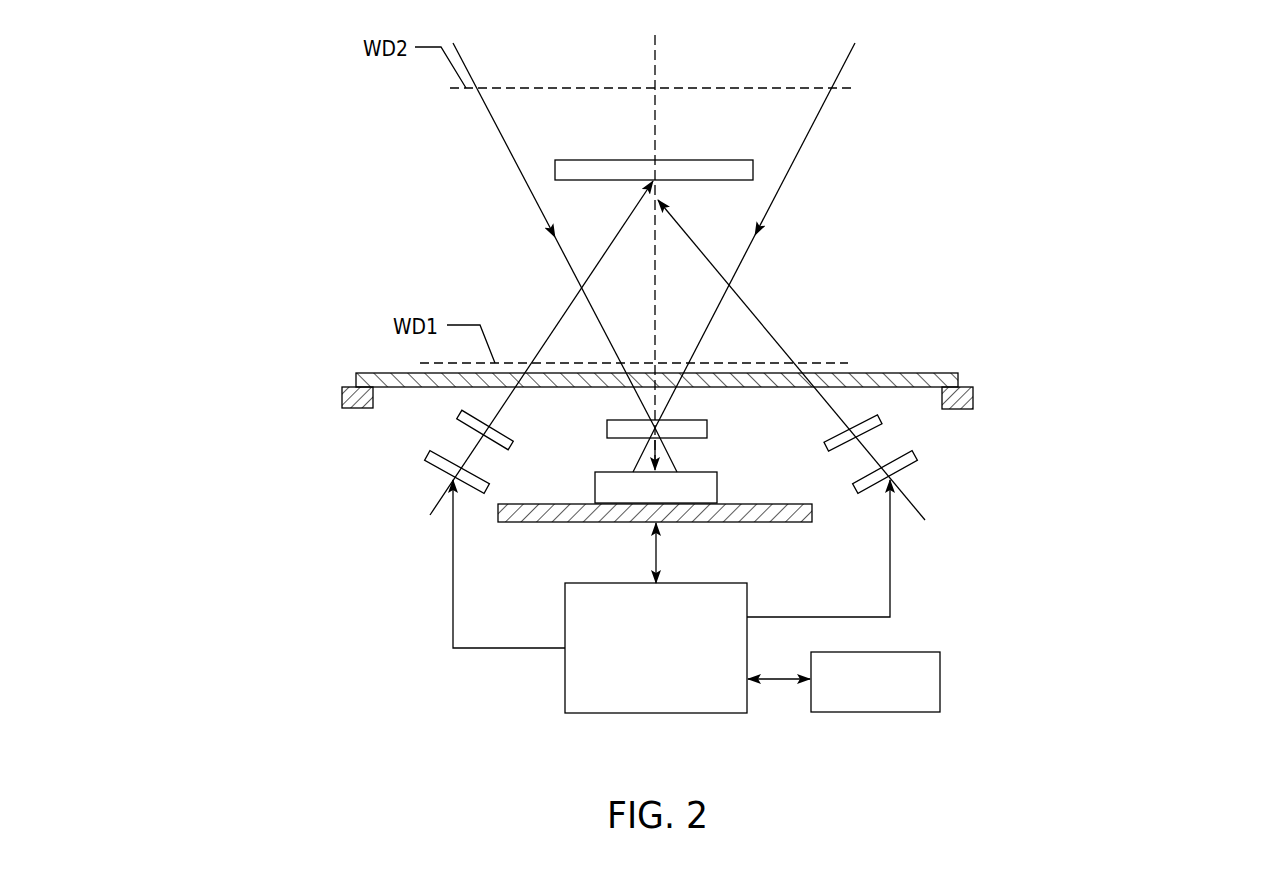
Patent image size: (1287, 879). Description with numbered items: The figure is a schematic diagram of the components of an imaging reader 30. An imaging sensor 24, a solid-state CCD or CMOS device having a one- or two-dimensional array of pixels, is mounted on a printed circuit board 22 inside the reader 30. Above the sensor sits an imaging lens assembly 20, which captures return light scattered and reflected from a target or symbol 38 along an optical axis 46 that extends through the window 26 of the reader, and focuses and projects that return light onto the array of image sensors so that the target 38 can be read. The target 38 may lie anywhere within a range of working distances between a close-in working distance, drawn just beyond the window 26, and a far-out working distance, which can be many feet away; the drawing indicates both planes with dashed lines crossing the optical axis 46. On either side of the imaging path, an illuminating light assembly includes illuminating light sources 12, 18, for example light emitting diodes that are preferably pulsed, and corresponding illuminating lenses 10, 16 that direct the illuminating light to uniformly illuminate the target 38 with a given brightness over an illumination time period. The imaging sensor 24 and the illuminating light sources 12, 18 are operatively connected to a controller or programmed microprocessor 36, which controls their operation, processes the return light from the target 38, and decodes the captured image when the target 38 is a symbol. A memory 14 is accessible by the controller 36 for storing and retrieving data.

The illuminating lens 10 is at (880, 422).
The illuminating light source 12 is at (903, 470).
The memory 14 is at (875, 712).
The illuminating lens 16 is at (457, 418).
The illuminating light source 18 is at (435, 473).
The imaging lens assembly 20 is at (607, 428).
The printed circuit board 22 is at (785, 523).
The imaging sensor 24 is at (595, 486).
The window 26 is at (362, 372).
The reader 30 is at (832, 265).
The controller 36 is at (657, 713).
The target 38 is at (705, 158).
The optical axis 46 is at (655, 50).